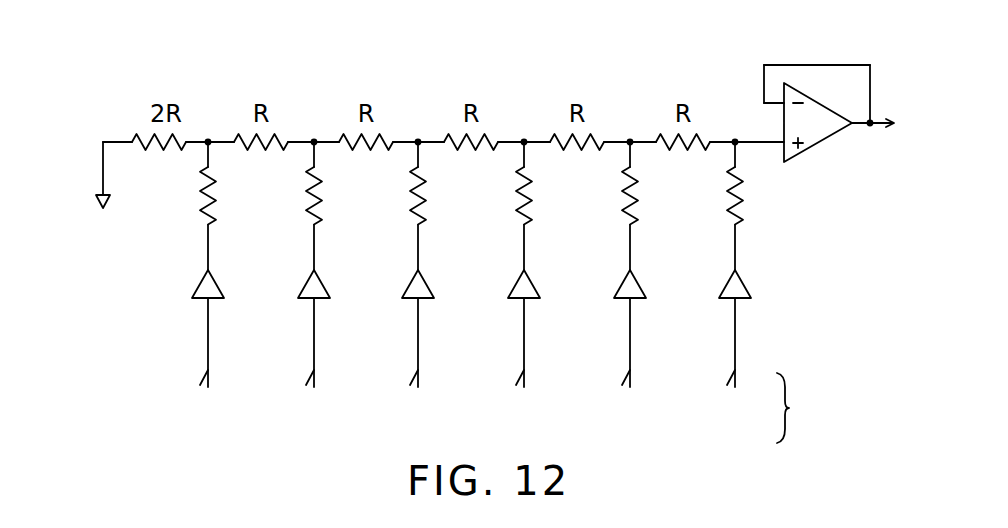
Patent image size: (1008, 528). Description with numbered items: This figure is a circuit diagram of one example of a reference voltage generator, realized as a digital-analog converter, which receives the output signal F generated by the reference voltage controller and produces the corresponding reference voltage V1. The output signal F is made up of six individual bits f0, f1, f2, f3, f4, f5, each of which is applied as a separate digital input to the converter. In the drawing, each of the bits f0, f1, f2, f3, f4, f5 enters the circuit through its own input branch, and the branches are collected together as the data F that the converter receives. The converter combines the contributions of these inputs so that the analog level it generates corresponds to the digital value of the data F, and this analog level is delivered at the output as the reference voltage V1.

The output signal bit f0 is at (224, 284).
The output signal bit f1 is at (330, 284).
The output signal bit f2 is at (434, 284).
The output signal bit f3 is at (540, 284).
The output signal bit f4 is at (646, 284).
The output signal bit f5 is at (751, 284).
The output signal F is at (798, 408).
The reference voltage V1 is at (821, 119).